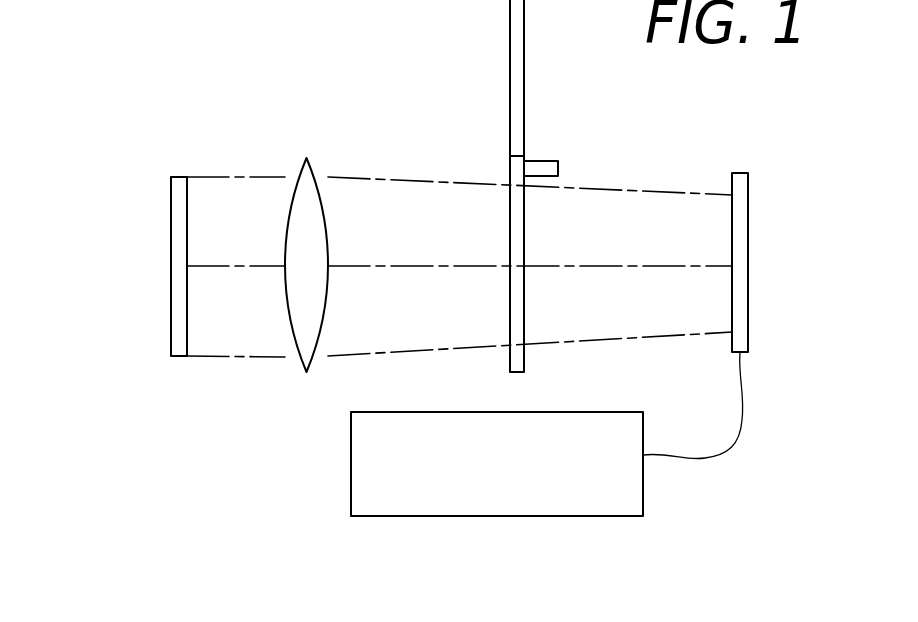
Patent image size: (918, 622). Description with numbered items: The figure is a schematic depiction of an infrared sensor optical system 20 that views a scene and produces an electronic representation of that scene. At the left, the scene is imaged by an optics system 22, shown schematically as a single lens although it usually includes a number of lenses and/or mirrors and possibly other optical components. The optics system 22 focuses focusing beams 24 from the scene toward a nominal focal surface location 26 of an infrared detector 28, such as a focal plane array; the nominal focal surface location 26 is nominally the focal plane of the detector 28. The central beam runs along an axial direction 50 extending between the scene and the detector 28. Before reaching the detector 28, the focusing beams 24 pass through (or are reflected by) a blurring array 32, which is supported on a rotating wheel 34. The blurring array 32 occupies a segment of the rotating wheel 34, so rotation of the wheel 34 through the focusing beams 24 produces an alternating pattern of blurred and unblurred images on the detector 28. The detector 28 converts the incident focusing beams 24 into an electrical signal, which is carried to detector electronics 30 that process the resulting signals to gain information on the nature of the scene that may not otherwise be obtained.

The infrared sensor optical system 20 is at (272, 79).
The optics system 22 is at (294, 368).
The focusing beams 24 is at (210, 177).
The nominal focal surface location 26 is at (724, 231).
The infrared detector 28 is at (740, 212).
The detector electronics 30 is at (350, 478).
The blurring array 32 is at (503, 311).
The rotating wheel 34 is at (533, 364).
The axial direction 50 is at (248, 266).